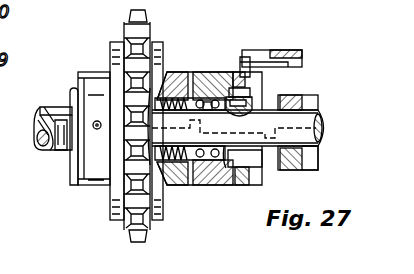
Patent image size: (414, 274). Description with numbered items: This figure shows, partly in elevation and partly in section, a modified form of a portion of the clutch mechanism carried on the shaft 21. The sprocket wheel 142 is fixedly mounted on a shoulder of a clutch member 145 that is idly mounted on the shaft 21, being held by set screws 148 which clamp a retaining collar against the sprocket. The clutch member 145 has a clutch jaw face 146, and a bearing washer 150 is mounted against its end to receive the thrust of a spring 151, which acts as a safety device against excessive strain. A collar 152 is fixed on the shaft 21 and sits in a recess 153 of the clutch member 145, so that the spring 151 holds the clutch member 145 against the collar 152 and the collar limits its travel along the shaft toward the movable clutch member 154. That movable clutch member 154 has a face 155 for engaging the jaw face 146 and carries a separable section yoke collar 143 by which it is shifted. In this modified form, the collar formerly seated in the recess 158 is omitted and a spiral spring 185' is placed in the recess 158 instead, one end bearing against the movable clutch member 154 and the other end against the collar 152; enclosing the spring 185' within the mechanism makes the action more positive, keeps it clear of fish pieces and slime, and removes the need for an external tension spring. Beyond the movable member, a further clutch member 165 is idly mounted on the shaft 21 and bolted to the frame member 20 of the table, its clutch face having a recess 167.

The frame member 20 is at (294, 56).
The shaft 21 is at (311, 128).
The sprocket wheel 142 is at (130, 240).
The separable section yoke collar 143 is at (264, 84).
The clutch member 145 is at (173, 180).
The clutch jaw face 146 is at (190, 98).
The set screws 148 is at (96, 121).
The bearing washer 150 is at (77, 182).
The spring 151 is at (64, 168).
The collar 152 is at (58, 160).
The recess 153 is at (166, 97).
The movable clutch member 154 is at (229, 185).
The face 155 is at (185, 165).
The recess 158 is at (243, 62).
The clutch member 165 is at (306, 157).
The recess 167 is at (319, 130).
The spiral spring 185' is at (231, 63).